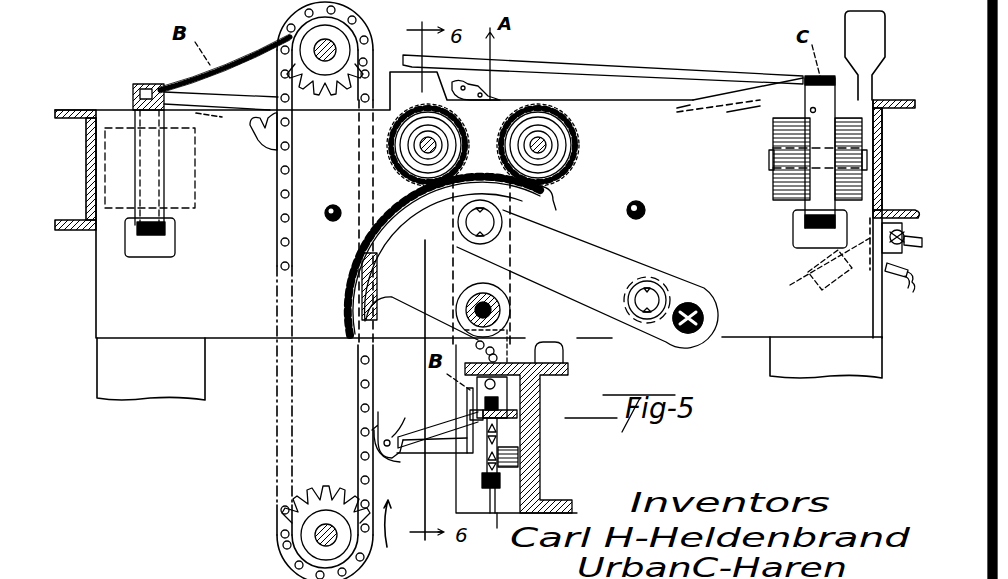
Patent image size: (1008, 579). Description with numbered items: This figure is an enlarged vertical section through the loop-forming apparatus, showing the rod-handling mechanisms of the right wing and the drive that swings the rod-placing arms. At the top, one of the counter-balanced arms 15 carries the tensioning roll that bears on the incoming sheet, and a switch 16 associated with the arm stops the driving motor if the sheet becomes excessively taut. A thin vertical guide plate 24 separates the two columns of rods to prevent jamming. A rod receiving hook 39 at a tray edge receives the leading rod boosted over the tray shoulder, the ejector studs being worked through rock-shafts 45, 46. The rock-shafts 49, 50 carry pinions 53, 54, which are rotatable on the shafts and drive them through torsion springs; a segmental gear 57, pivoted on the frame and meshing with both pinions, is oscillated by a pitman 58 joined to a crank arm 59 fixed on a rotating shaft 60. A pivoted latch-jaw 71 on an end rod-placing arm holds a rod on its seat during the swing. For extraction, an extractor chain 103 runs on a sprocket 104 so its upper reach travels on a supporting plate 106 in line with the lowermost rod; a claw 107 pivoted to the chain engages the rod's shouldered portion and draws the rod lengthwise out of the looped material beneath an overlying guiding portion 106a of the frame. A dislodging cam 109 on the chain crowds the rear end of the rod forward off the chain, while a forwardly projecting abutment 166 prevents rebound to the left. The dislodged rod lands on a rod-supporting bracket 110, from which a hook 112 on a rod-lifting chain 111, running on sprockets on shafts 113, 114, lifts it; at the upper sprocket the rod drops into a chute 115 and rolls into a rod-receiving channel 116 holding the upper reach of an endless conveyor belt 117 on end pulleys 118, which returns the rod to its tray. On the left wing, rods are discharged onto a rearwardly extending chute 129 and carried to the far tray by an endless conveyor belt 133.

The counter-balanced arm 15 is at (921, 225).
The switch 16 is at (905, 282).
The vertical guide plate 24 is at (497, 515).
The rod receiving hook 39 is at (470, 415).
The rock-shaft 45 is at (335, 205).
The rock-shaft 46 is at (644, 203).
The rock-shaft 49 is at (420, 144).
The rock-shaft 50 is at (545, 144).
The pinion 53 is at (396, 124).
The pinion 54 is at (570, 124).
The segmental gear 57 is at (407, 247).
The pitman 58 is at (557, 247).
The crank arm 59 is at (677, 293).
The rotating shaft 60 is at (690, 312).
The latch-jaw 71 is at (458, 87).
The extractor chain 103 is at (540, 395).
The sprocket 104 is at (492, 455).
The supporting plate 106 is at (484, 414).
The overlying guiding portion 106a is at (560, 366).
The claw 107 is at (490, 384).
The dislodging cam 109 is at (497, 480).
The rod-supporting bracket 110 is at (385, 474).
The rod-lifting chain 111 is at (279, 528).
The hook 112 is at (248, 138).
The upper shaft 113 is at (333, 53).
The lower shaft 114 is at (318, 540).
The chute 115 is at (232, 52).
The rod-receiving channel 116 is at (133, 92).
The endless conveyor belt 117 is at (160, 236).
The end pulley 118 is at (166, 226).
The rearwardly extending chute 129 is at (633, 58).
The endless conveyor belt 133 is at (810, 113).
The abutment 166 is at (408, 417).